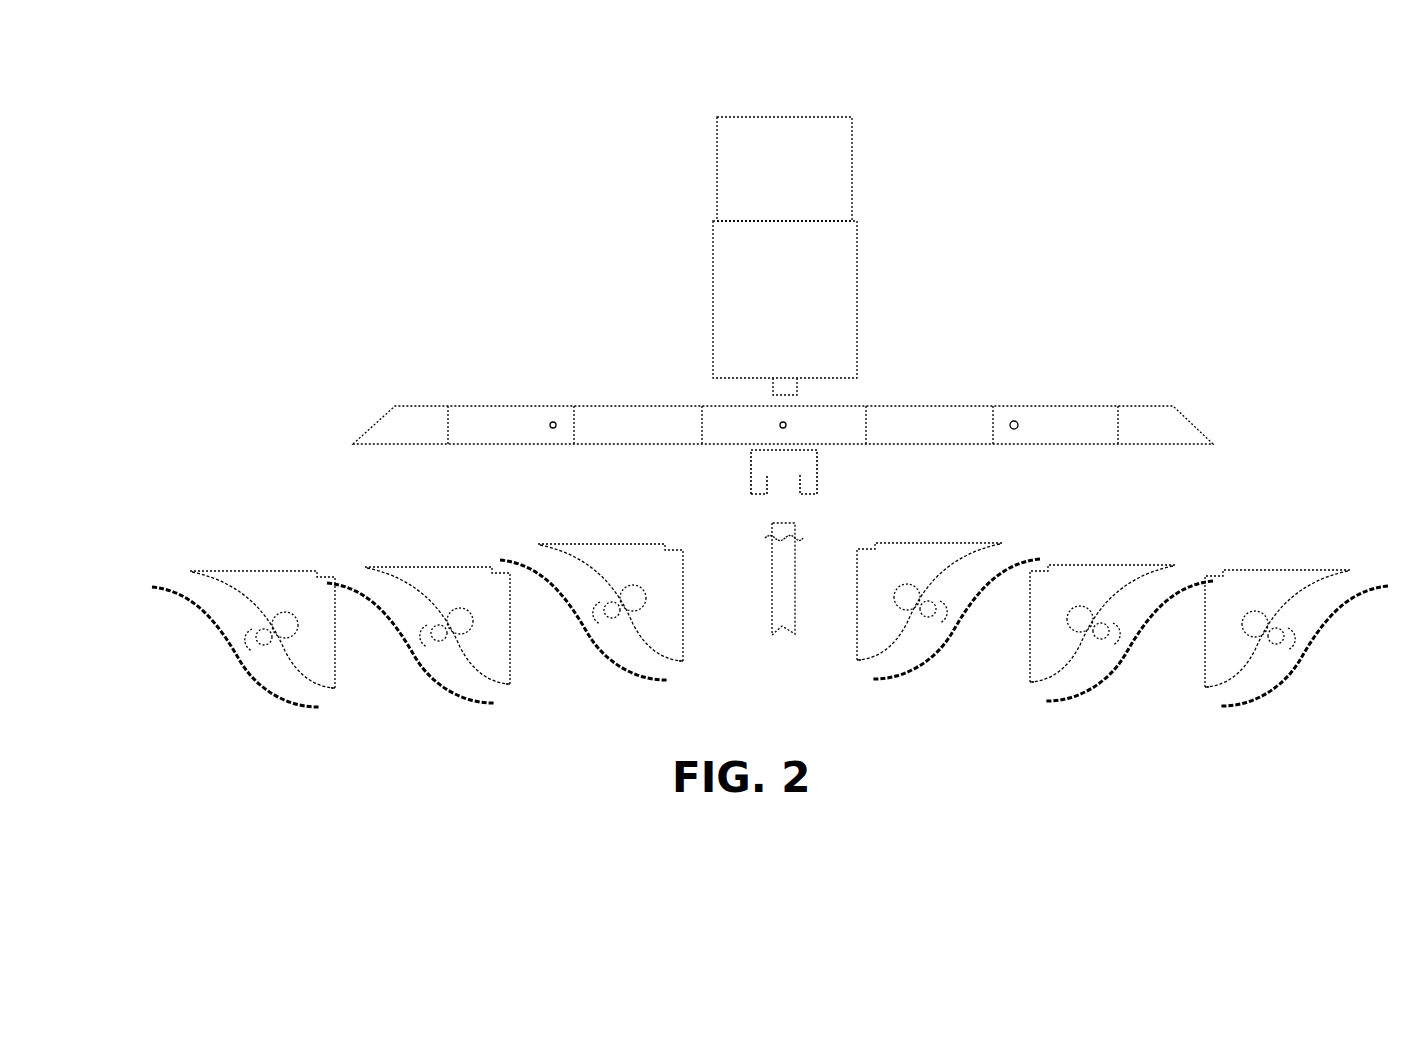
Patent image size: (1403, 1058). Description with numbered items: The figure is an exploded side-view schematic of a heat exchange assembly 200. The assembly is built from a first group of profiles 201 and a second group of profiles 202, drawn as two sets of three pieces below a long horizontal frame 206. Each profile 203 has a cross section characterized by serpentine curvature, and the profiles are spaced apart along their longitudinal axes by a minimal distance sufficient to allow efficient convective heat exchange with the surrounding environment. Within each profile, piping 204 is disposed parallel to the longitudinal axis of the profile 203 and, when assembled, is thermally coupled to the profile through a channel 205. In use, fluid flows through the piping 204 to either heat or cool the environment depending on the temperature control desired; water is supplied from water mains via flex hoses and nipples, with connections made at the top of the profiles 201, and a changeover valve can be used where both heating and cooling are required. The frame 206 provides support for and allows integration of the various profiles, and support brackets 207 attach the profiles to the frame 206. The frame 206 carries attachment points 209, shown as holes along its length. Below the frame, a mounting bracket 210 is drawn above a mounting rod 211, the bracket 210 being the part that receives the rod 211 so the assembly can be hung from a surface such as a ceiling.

The heat exchange assembly 200 is at (795, 113).
The first group of profiles 201 is at (415, 655).
The second group of profiles 202 is at (1090, 718).
The profile 203 is at (168, 588).
The piping 204 is at (265, 637).
The channel 205 is at (245, 637).
The frame 206 is at (920, 425).
The support brackets 207 is at (280, 590).
The attachment points 209 is at (1017, 422).
The mounting bracket 210 is at (812, 468).
The mounting rod 211 is at (781, 627).